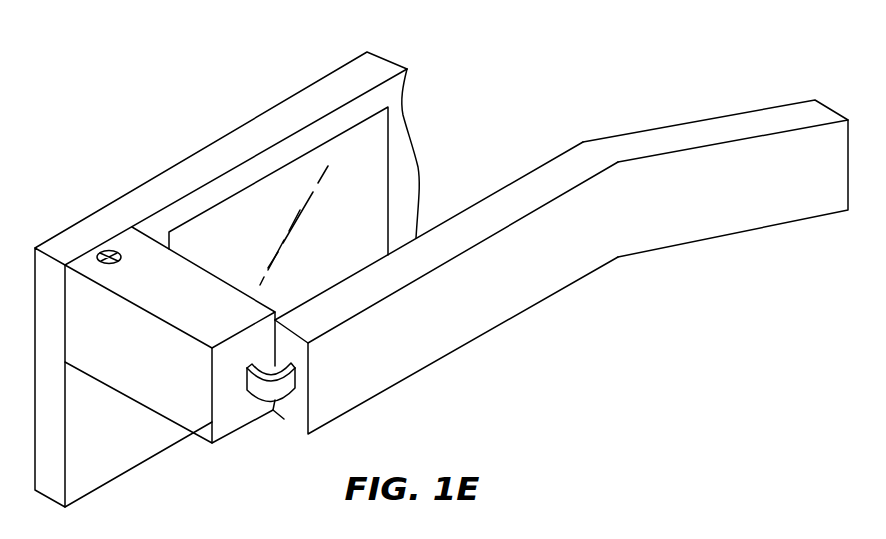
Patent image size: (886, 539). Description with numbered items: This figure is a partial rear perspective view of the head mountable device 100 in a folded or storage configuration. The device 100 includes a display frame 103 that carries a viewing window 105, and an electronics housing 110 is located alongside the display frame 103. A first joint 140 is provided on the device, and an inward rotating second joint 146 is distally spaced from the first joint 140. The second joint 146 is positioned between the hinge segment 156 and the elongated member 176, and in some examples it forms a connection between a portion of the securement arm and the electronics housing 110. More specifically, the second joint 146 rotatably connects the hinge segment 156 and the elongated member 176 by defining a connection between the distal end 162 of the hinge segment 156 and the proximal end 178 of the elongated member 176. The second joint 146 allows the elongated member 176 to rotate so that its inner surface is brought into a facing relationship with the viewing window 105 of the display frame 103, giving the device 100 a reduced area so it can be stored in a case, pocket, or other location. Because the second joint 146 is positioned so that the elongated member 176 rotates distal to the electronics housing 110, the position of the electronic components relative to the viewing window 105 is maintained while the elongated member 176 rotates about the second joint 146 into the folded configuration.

The head mountable device 100 is at (426, 270).
The display frame 103 is at (380, 70).
The viewing window 105 is at (368, 133).
The electronics housing 110 is at (209, 256).
The first joint 140 is at (112, 247).
The second joint 146 is at (286, 403).
The hinge segment 156 is at (175, 403).
The distal end 162 is at (223, 418).
The elongated member 176 is at (578, 158).
The proximal end 178 is at (350, 397).